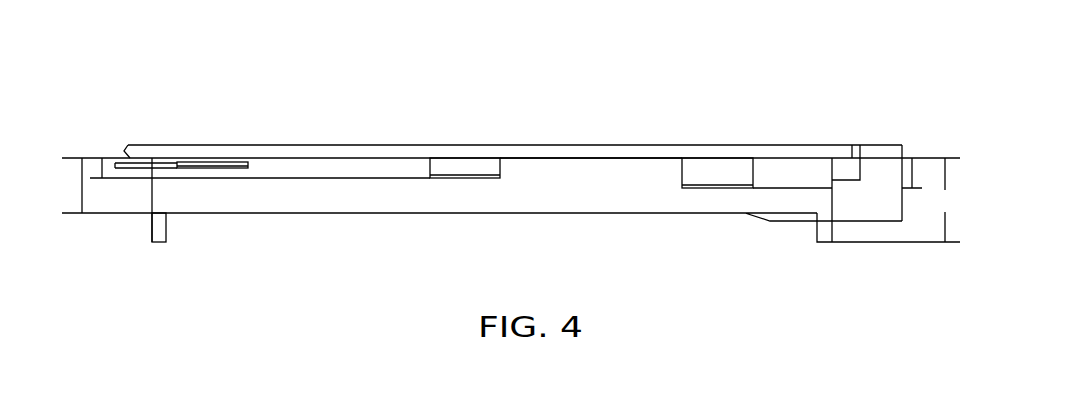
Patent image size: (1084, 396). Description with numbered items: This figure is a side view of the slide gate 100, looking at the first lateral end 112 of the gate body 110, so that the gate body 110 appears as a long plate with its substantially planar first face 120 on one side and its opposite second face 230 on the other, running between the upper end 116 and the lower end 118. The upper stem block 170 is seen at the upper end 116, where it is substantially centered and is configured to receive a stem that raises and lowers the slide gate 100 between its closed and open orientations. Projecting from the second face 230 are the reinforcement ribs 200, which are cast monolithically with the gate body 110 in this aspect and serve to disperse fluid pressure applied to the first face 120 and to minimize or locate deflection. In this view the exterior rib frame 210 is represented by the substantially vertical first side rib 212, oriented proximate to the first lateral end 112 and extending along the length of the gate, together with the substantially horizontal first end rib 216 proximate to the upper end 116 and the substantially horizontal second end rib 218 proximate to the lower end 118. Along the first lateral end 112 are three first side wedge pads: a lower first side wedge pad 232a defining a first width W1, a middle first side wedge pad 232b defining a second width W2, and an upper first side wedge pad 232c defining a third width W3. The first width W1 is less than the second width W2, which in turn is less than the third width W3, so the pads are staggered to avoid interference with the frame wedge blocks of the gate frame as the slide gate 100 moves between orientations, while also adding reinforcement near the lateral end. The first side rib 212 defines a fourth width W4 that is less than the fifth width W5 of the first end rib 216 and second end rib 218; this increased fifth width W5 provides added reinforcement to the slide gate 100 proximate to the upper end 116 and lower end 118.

The slide gate 100 is at (822, 95).
The gate body 110 is at (330, 152).
The first lateral end 112 is at (603, 155).
The upper end 116 is at (833, 202).
The lower end 118 is at (150, 198).
The first face 120 is at (528, 143).
The upper stem block 170 is at (890, 212).
The reinforcement ribs 200 is at (319, 204).
The exterior rib frame 210 is at (397, 221).
The first side rib 212 is at (647, 198).
The first end rib 216 is at (817, 233).
The second end rib 218 is at (158, 227).
The second face 230 is at (579, 163).
The lower first side wedge pad 232a is at (215, 162).
The middle first side wedge pad 232b is at (467, 165).
The upper first side wedge pad 232c is at (722, 165).
The first width W1 is at (122, 163).
The second width W2 is at (100, 173).
The third width W3 is at (913, 175).
The fourth width W4 is at (78, 177).
The fifth width W5 is at (943, 200).